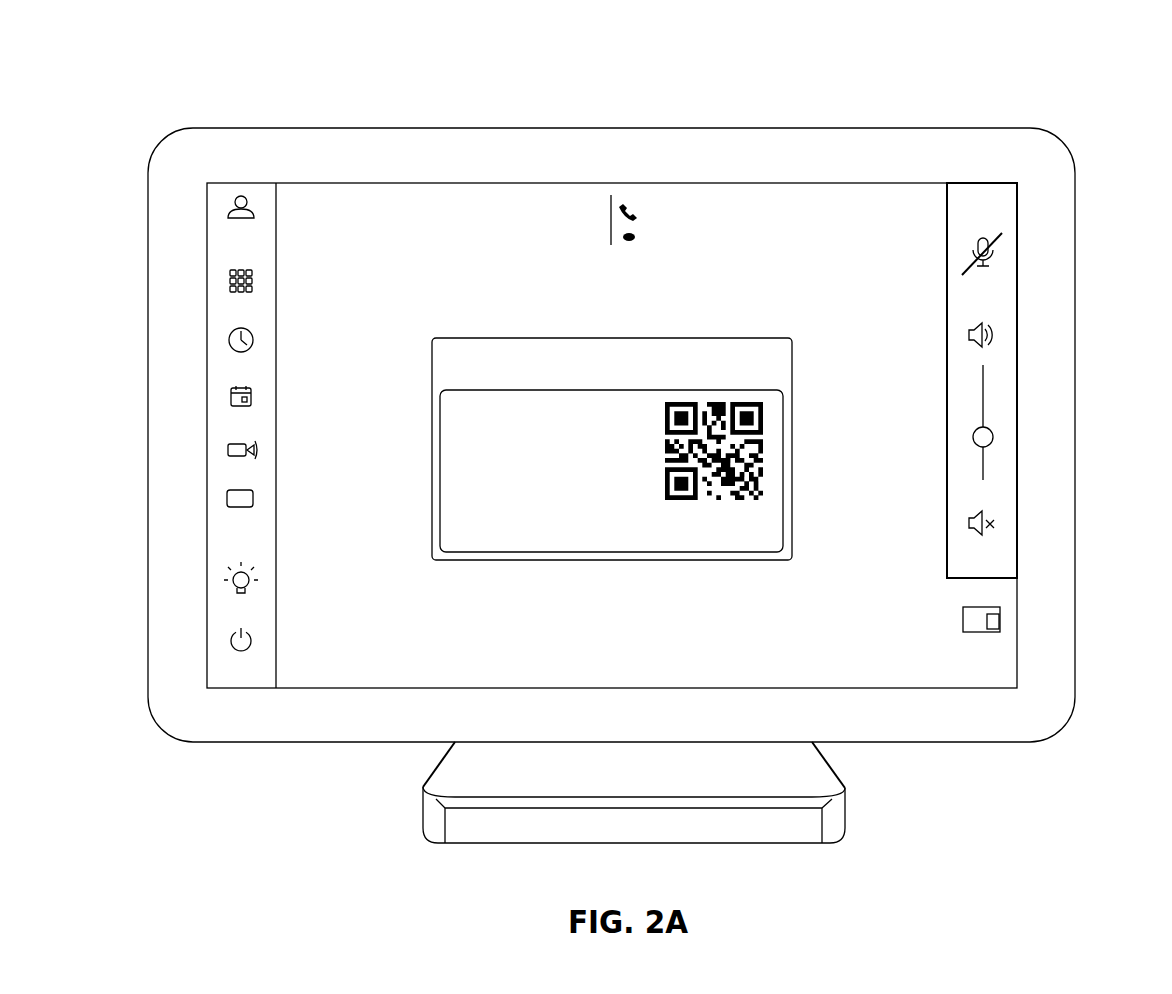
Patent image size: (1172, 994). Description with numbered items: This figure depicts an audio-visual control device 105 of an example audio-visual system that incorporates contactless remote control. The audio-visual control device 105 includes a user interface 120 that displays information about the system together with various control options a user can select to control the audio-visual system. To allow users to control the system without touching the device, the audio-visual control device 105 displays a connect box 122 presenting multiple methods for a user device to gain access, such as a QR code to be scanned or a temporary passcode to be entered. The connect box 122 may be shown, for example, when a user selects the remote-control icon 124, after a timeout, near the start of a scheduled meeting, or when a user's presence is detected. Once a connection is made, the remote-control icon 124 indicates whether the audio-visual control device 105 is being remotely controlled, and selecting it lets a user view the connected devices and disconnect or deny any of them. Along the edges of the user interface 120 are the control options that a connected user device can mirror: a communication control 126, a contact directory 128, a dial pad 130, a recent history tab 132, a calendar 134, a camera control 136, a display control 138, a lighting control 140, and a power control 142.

The audio-visual control device 105 is at (593, 127).
The user interface 120 is at (377, 218).
The connect box 122 is at (790, 493).
The remote-control icon 124 is at (1000, 628).
The communication control 126 is at (1017, 445).
The contact directory 128 is at (227, 218).
The dial pad 130 is at (227, 287).
The recent history tab 132 is at (227, 347).
The calendar 134 is at (227, 404).
The camera control 136 is at (227, 455).
The display control 138 is at (227, 505).
The lighting control 140 is at (233, 588).
The power control 142 is at (227, 650).